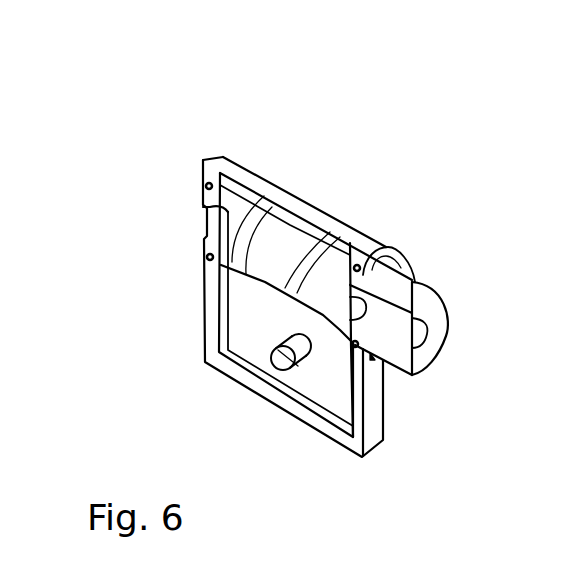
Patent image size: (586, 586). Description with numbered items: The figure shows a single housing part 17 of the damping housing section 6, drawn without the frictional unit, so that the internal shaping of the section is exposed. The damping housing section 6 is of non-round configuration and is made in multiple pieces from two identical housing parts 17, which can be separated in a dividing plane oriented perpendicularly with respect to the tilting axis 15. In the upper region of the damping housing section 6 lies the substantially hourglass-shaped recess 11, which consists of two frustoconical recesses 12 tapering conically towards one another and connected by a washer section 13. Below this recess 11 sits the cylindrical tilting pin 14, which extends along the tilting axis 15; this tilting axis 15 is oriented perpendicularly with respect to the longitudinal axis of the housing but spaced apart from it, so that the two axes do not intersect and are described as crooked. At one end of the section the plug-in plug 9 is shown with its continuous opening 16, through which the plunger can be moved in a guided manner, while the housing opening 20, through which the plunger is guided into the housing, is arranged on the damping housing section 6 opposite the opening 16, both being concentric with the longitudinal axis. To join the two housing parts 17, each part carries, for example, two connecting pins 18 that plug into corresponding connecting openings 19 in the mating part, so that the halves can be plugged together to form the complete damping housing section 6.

The damping housing section 6 is at (309, 190).
The plug-in plug 9 is at (437, 315).
The hourglass-shaped recess 11 is at (348, 240).
The frustoconical recesses 12 is at (268, 195).
The washer section 13 is at (322, 245).
The tilting pin 14 is at (270, 333).
The tilting axis 15 is at (283, 352).
The opening 16 is at (412, 337).
The housing parts 17 is at (210, 310).
The connecting pins 18 is at (208, 186).
The connecting openings 19 is at (208, 257).
The housing opening 20 is at (215, 222).